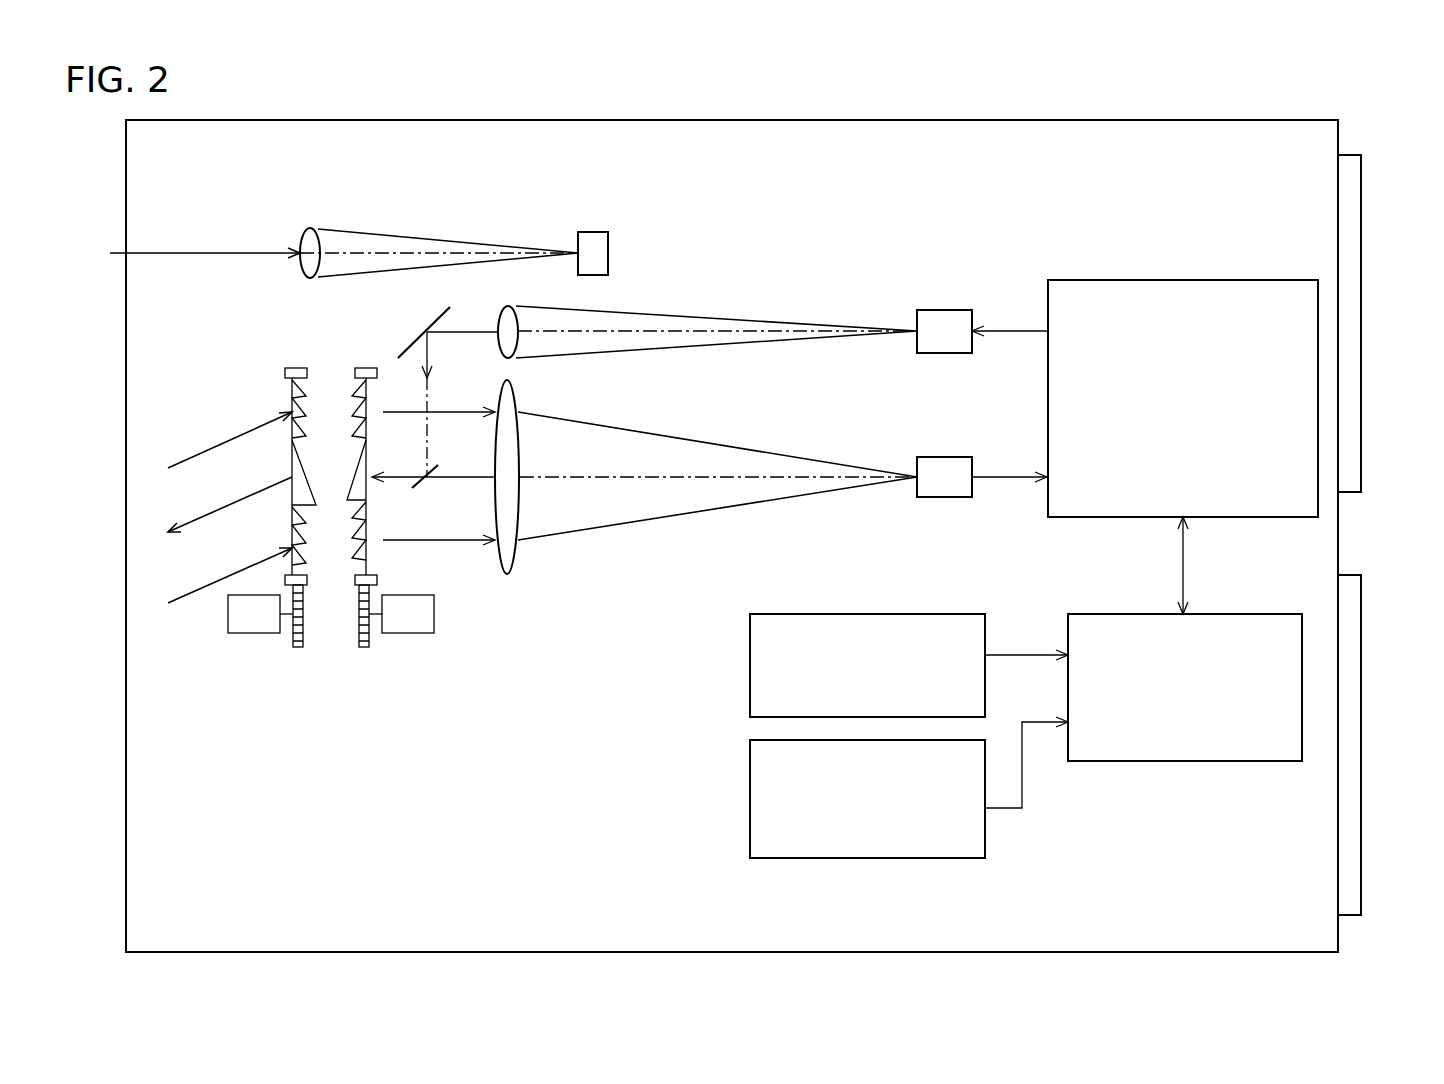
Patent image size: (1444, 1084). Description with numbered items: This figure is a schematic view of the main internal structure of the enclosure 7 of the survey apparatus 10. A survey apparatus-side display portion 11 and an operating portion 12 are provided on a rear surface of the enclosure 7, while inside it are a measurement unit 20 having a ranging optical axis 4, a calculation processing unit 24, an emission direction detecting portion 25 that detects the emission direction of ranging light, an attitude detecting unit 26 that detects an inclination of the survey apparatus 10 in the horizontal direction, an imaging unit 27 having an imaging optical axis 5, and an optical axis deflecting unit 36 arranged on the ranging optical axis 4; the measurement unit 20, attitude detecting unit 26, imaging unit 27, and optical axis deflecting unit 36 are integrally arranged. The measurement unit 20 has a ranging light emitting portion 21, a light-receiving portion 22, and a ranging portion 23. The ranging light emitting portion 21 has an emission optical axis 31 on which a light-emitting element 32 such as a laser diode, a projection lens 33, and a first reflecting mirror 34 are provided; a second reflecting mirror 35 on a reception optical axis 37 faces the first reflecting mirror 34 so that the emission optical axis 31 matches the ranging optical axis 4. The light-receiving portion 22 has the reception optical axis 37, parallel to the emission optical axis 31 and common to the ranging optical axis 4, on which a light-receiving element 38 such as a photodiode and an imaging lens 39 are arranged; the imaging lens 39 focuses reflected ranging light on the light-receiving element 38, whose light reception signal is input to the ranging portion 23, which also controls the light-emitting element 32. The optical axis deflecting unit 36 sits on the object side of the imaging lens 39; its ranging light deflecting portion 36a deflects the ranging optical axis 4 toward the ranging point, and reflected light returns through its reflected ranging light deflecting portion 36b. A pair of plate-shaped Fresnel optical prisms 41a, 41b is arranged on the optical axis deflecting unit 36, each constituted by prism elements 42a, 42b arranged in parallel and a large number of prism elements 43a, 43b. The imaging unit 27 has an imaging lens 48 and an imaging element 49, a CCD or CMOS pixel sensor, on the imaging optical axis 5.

The ranging optical axis 4 is at (409, 470).
The imaging optical axis 5 is at (393, 250).
The enclosure 7 is at (927, 118).
The survey apparatus 10 is at (1108, 116).
The survey apparatus-side display portion 11 is at (1362, 296).
The operating portion 12 is at (1365, 740).
The measurement unit 20 is at (901, 423).
The ranging light emitting portion 21 is at (748, 318).
The light-receiving portion 22 is at (718, 432).
The ranging portion 23 is at (1175, 280).
The calculation processing unit 24 is at (1254, 612).
The emission direction detecting portion 25 is at (874, 860).
The attitude detecting unit 26 is at (895, 612).
The imaging unit 27 is at (411, 167).
The emission optical axis 31 is at (628, 330).
The light-emitting element 32 is at (945, 310).
The projection lens 33 is at (517, 343).
The first reflecting mirror 34 is at (433, 318).
The second reflecting mirror 35 is at (422, 488).
The optical axis deflecting unit 36 is at (332, 502).
The ranging light deflecting portion 36a is at (265, 467).
The reflected ranging light deflecting portion 36b is at (275, 393).
The reception optical axis 37 is at (652, 478).
The light-receiving element 38 is at (938, 457).
The imaging lens 39 is at (518, 557).
The optical prism 41a is at (285, 530).
The optical prism 41b is at (373, 550).
The prism element 42a is at (290, 420).
The prism element 42b is at (347, 497).
The prism elements 43a is at (292, 513).
The prism elements 43b is at (366, 420).
The imaging lens 48 is at (303, 228).
The imaging element 49 is at (645, 221).